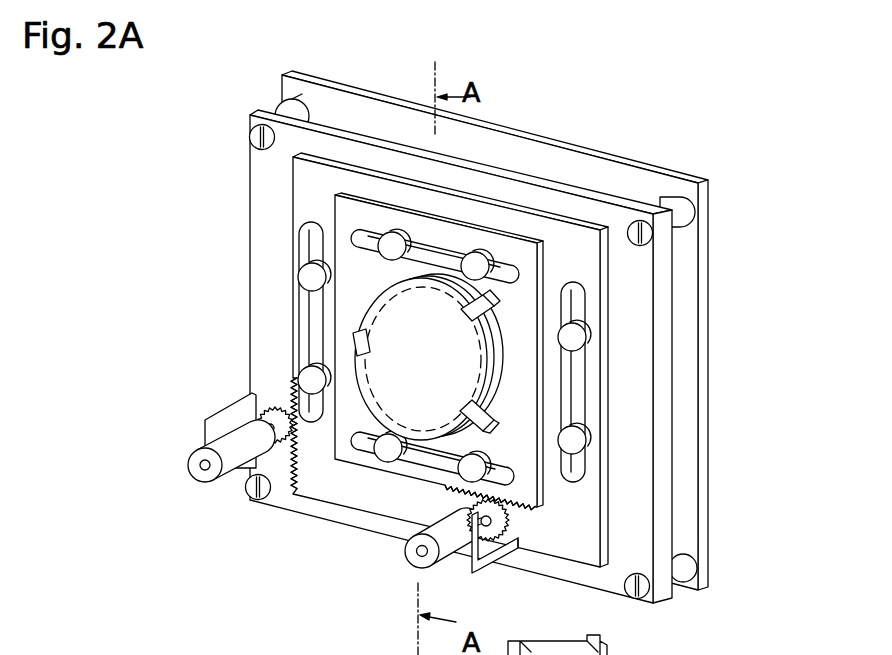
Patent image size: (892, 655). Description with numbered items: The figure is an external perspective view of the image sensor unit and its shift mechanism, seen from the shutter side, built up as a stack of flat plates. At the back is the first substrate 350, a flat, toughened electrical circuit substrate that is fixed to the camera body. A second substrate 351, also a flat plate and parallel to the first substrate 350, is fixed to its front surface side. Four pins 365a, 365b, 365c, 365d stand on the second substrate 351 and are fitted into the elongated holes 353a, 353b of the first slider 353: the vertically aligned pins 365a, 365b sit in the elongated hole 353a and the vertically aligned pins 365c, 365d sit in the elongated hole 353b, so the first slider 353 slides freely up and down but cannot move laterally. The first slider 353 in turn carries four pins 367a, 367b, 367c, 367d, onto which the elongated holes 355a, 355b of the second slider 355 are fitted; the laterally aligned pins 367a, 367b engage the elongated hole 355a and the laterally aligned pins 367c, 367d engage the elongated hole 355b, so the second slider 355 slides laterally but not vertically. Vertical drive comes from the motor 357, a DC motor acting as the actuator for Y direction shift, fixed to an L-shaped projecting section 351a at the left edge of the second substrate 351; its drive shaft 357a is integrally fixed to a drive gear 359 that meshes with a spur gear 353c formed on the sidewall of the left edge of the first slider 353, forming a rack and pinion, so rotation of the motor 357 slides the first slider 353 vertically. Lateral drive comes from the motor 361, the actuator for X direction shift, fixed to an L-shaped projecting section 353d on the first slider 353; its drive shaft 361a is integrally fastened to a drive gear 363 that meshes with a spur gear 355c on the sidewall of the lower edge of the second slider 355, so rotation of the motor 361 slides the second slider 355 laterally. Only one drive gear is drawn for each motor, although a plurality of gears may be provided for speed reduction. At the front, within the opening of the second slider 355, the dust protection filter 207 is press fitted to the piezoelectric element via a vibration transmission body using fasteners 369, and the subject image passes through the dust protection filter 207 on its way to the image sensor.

The dust protection filter 207 is at (372, 290).
The first substrate 350 is at (323, 84).
The second substrate 351 is at (364, 155).
The L-shaped projecting section 351a is at (212, 432).
The first slider 353 is at (602, 290).
The elongated hole 353a is at (578, 395).
The elongated hole 353b is at (308, 228).
The spur gear 353c is at (292, 396).
The L-shaped projecting section 353d is at (457, 568).
The second slider 355 is at (517, 238).
The elongated hole 355a is at (506, 272).
The elongated hole 355b is at (445, 487).
The spur gear 355c is at (458, 483).
The motor 357 is at (196, 465).
The drive shaft 357a is at (262, 424).
The drive gear 359 is at (266, 415).
The motor 361 is at (406, 553).
The drive shaft 361a is at (500, 540).
The drive gear 363 is at (522, 540).
The pin 365a is at (580, 337).
The pin 365b is at (580, 441).
The pin 365c is at (306, 272).
The pin 365d is at (305, 375).
The pin 367a is at (394, 240).
The pin 367b is at (477, 262).
The pin 367c is at (387, 452).
The pin 367d is at (470, 472).
The fasteners 369 is at (492, 302).